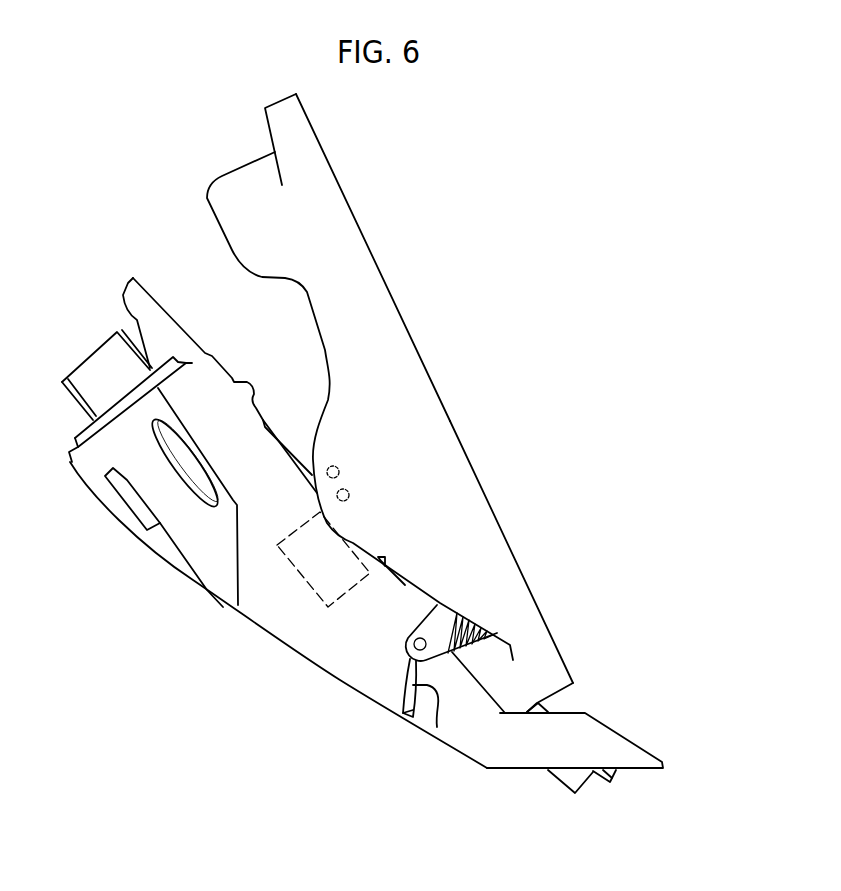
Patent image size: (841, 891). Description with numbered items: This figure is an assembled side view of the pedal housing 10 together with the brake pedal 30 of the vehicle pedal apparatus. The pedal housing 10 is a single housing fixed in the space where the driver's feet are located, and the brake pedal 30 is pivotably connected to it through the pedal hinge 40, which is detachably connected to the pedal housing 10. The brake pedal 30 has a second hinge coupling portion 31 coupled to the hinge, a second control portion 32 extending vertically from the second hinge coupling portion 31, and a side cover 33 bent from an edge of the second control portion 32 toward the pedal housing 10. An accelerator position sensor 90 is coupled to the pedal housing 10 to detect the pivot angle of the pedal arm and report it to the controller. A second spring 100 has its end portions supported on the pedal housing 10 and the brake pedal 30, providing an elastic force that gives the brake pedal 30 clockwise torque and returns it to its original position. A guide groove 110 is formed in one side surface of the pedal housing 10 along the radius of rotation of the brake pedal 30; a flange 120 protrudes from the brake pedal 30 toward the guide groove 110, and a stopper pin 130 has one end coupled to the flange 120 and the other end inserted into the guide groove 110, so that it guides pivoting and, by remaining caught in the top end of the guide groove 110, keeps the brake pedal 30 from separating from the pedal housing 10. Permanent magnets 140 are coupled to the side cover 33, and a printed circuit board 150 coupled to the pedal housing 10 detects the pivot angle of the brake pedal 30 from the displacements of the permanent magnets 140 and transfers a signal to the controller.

The pedal housing 10 is at (200, 545).
The brake pedal 30 is at (350, 192).
The second hinge coupling portion 31 is at (552, 665).
The second control portion 32 is at (377, 260).
The side cover 33 is at (393, 428).
The pedal hinge 40 is at (548, 705).
The accelerator position sensor 90 is at (95, 370).
The second spring 100 is at (492, 664).
The guide groove 110 is at (437, 727).
The flange 120 is at (445, 622).
The stopper pin 130 is at (410, 650).
The permanent magnets 140 is at (339, 470).
The printed circuit board 150 is at (310, 586).